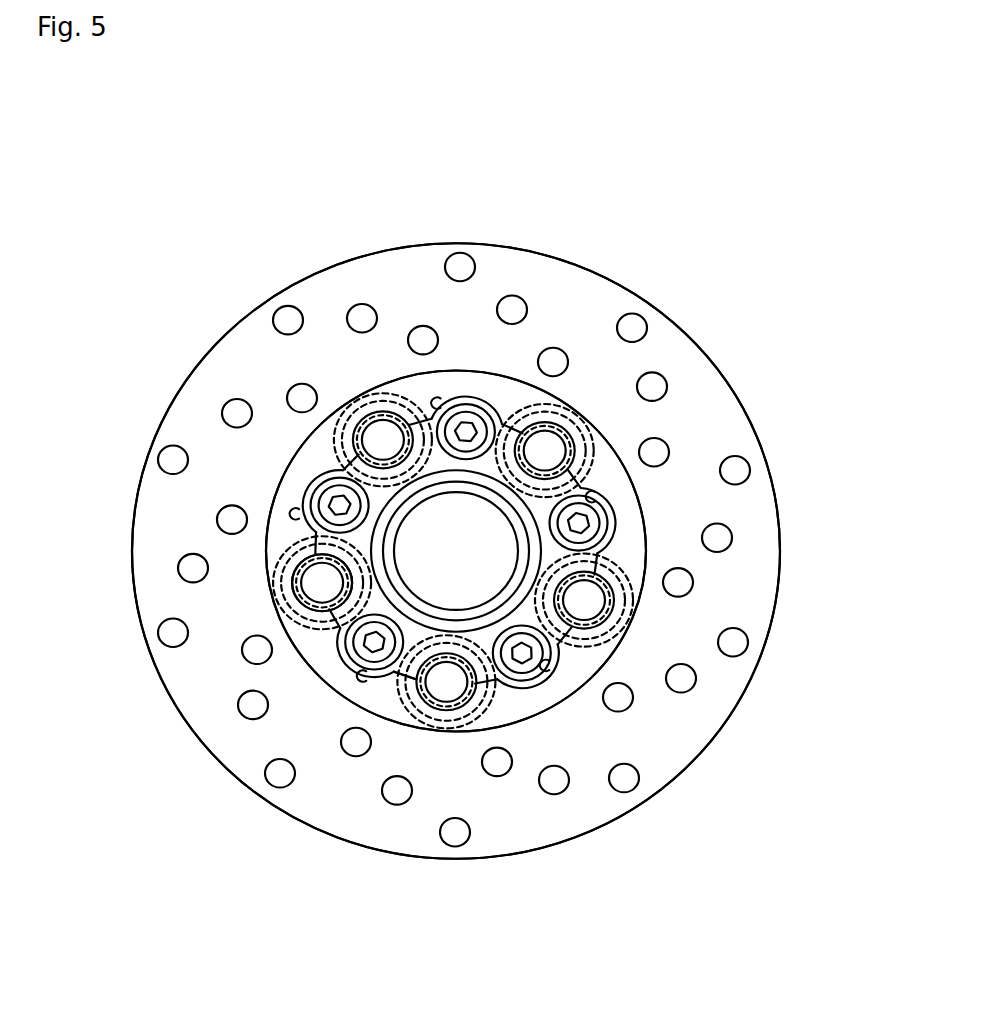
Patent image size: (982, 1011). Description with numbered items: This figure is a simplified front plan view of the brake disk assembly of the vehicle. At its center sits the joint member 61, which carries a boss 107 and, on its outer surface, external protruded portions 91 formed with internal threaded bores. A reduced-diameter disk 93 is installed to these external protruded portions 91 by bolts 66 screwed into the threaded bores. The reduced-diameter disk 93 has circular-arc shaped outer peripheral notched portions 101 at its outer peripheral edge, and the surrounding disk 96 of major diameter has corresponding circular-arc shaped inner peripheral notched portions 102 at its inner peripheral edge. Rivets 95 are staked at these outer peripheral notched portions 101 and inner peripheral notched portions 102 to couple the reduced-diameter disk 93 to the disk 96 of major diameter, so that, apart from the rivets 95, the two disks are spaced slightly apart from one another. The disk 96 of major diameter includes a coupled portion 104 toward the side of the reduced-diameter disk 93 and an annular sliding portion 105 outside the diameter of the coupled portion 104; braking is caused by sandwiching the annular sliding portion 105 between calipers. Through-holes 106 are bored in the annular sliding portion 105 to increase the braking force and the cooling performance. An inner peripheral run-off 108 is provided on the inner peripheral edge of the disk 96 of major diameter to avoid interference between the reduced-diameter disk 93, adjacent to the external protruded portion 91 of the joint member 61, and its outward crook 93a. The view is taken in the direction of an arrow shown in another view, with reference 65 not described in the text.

The lock-up clutch piston 65 is at (222, 290).
The disk of major diameter 96 is at (373, 243).
The coupled portion 104 is at (327, 447).
The annular sliding portion 105 is at (188, 430).
The through-holes 106 is at (459, 252).
The bolts 66 is at (450, 457).
The external protruded portions 91 is at (464, 405).
The rivets 95 is at (376, 412).
The outer peripheral notched portions 101 is at (560, 466).
The inner peripheral notched portions 102 is at (549, 447).
The reduced-diameter disk 93 is at (540, 427).
The outward crook 93a is at (493, 427).
The inner peripheral run-off 108 is at (508, 427).
The boss 107 is at (405, 683).
The joint member 61 is at (295, 570).